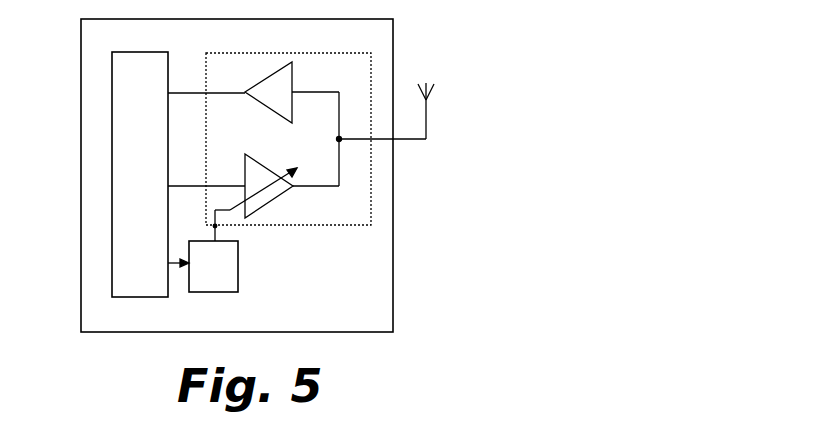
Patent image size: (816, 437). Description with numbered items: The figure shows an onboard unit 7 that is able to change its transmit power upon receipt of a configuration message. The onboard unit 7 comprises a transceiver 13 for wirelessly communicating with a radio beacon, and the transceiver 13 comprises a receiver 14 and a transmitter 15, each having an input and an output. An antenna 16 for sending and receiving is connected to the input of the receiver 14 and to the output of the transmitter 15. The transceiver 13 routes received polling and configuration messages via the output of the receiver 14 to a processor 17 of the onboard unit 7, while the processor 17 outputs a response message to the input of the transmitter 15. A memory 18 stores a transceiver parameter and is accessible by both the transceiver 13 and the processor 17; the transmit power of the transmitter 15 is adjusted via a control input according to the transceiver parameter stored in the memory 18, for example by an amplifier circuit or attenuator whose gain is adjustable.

The onboard unit 7 is at (393, 242).
The transceiver 13 is at (305, 226).
The receiver 14 is at (275, 116).
The transmitter 15 is at (256, 160).
The antenna 16 is at (432, 88).
The processor 17 is at (155, 47).
The memory 18 is at (238, 279).